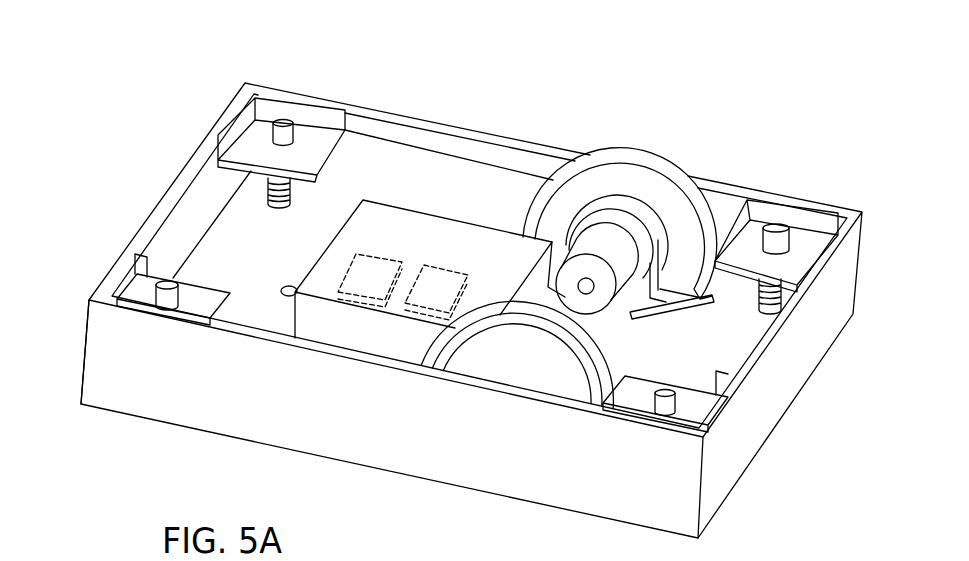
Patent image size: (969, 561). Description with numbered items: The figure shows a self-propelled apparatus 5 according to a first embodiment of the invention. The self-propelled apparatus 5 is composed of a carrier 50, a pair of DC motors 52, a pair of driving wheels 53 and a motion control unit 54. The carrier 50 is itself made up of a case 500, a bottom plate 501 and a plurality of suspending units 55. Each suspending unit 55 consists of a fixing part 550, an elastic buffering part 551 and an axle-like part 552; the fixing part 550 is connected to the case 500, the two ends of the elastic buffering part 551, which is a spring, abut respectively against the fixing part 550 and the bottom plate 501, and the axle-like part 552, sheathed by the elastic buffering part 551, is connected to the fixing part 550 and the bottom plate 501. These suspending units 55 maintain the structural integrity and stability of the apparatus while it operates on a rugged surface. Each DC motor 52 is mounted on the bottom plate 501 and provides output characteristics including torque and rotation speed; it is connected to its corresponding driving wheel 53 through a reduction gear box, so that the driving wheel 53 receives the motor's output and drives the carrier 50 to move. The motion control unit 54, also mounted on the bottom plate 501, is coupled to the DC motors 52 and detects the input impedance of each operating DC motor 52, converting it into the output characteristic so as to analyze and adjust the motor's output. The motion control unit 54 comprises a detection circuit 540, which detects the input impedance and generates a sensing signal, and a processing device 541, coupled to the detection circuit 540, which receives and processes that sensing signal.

The self-propelled apparatus 5 is at (70, 97).
The carrier 50 is at (76, 312).
The case 500 is at (398, 443).
The bottom plate 501 is at (717, 330).
The DC motor 52 is at (617, 298).
The driving wheel 53 is at (647, 171).
The motion control unit 54 is at (396, 228).
The detection circuit 540 is at (360, 282).
The processing device 541 is at (428, 294).
The suspending unit 55 is at (247, 119).
The fixing part 550 is at (309, 140).
The elastic buffering part 551 is at (283, 208).
The axle-like part 552 is at (283, 119).